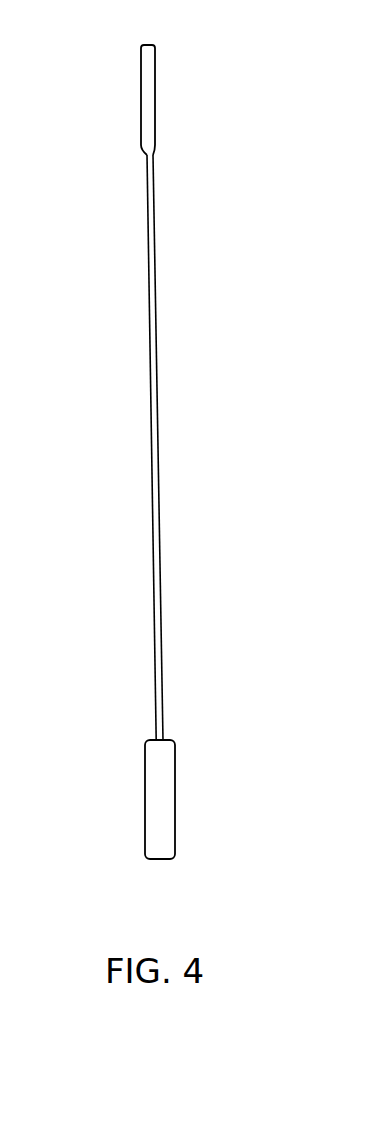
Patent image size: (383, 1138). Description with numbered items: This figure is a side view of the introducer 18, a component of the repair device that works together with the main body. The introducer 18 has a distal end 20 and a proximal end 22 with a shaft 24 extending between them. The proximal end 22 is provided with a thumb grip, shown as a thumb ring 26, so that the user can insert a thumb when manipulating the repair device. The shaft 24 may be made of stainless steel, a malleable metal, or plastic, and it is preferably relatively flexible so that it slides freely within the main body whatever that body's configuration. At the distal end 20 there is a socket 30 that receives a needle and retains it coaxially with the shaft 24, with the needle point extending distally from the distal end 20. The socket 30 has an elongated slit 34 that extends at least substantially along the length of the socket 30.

The introducer 18 is at (118, 218).
The distal end 20 is at (157, 137).
The proximal end 22 is at (163, 728).
The shaft 24 is at (158, 432).
The thumb ring 26 is at (175, 807).
The socket 30 is at (141, 72).
The elongated slit 34 is at (153, 82).